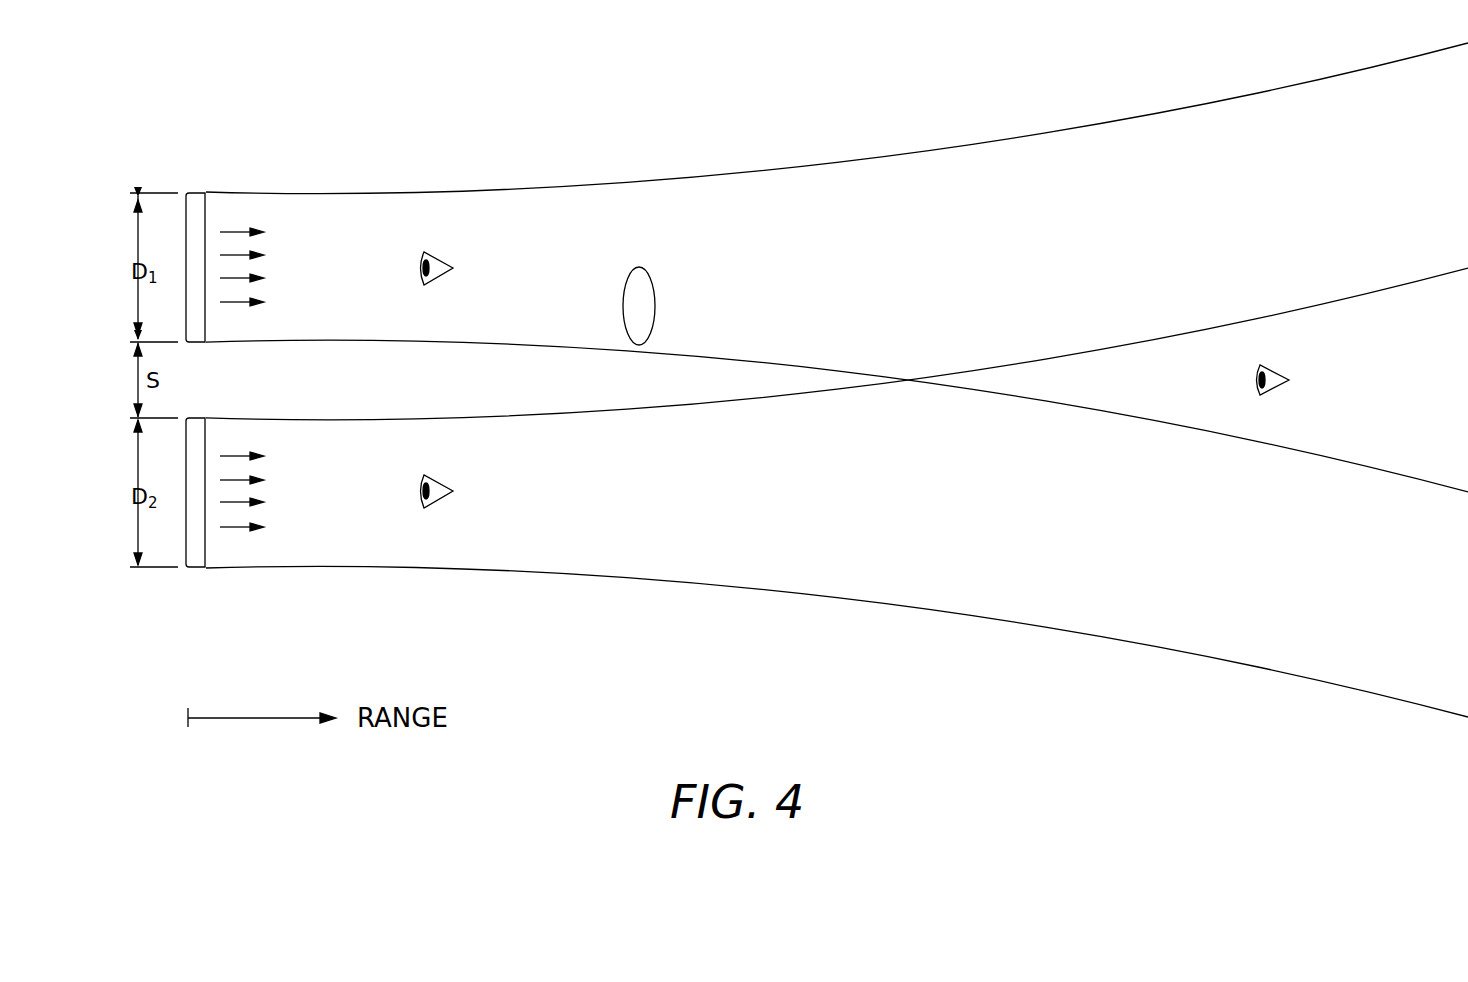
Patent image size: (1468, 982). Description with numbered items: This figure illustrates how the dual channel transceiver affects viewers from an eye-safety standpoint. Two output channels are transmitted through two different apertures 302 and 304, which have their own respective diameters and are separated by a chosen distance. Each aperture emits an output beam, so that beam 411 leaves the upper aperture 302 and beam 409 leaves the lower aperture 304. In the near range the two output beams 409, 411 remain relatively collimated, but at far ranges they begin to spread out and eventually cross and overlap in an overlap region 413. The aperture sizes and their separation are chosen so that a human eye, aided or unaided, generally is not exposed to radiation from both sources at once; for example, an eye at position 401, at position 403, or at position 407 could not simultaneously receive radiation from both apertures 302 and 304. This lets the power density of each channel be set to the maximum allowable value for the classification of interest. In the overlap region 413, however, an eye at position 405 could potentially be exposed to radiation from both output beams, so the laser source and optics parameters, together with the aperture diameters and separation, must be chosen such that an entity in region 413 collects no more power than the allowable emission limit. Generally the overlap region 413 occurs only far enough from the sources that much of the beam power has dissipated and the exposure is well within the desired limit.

The aperture 302 is at (196, 200).
The aperture 304 is at (196, 560).
The eye position 401 is at (437, 258).
The eye position 403 is at (437, 481).
The eye position 405 is at (1272, 372).
The eye position 407 is at (652, 282).
The output beam 409 is at (789, 562).
The output beam 411 is at (789, 197).
The overlap region 413 is at (1178, 389).